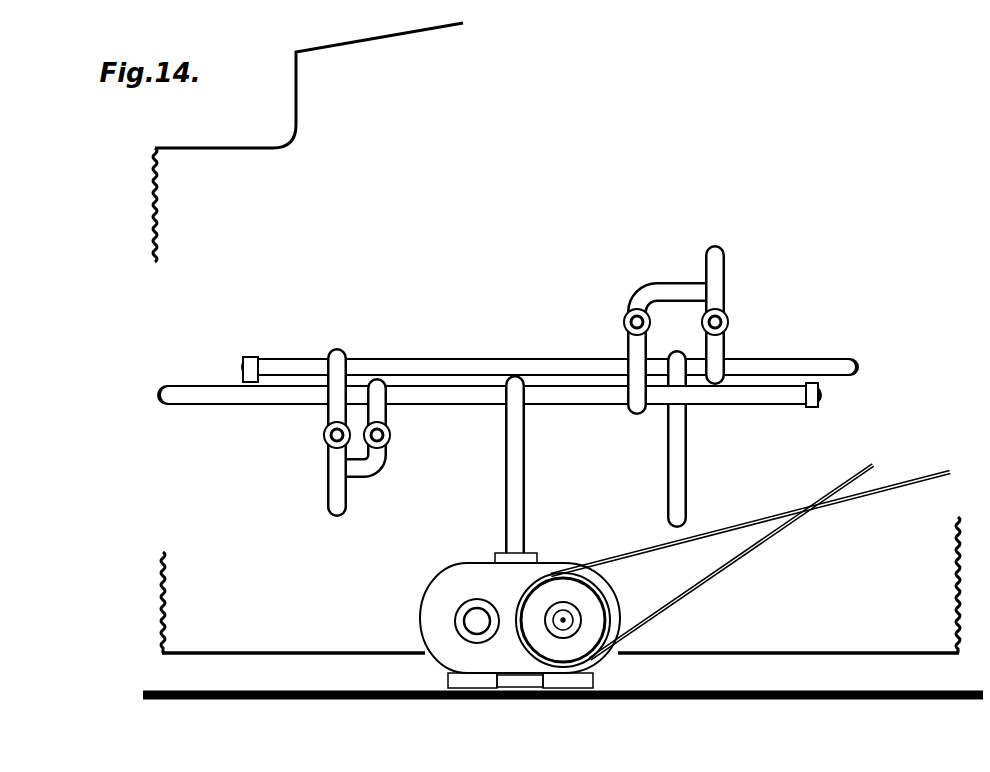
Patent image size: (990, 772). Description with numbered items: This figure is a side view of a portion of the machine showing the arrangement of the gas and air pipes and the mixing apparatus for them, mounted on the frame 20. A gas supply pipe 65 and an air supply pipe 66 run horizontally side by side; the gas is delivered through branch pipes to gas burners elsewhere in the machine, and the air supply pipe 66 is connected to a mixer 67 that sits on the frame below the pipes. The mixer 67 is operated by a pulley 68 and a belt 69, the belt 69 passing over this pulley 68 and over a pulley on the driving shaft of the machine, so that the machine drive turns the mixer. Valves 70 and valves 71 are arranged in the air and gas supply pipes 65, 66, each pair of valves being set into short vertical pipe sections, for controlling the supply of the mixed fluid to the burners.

The frame 20 is at (563, 359).
The gas supply pipe 65 is at (477, 362).
The air supply pipe 66 is at (254, 402).
The mixer 67 is at (520, 620).
The pulley 68 is at (600, 602).
The belt 69 is at (776, 532).
The valve 70 is at (324, 434).
The valve 71 is at (626, 328).